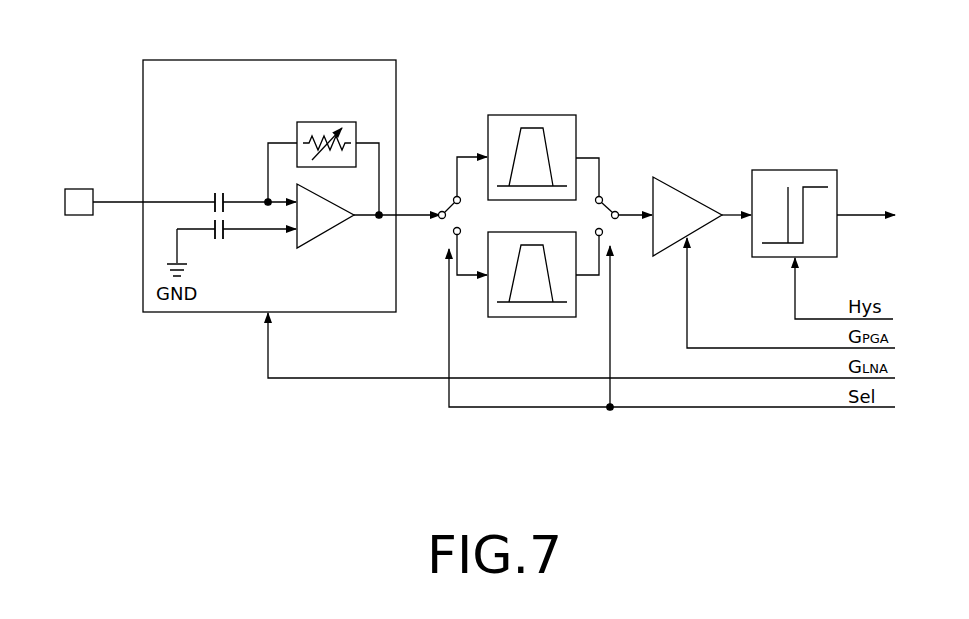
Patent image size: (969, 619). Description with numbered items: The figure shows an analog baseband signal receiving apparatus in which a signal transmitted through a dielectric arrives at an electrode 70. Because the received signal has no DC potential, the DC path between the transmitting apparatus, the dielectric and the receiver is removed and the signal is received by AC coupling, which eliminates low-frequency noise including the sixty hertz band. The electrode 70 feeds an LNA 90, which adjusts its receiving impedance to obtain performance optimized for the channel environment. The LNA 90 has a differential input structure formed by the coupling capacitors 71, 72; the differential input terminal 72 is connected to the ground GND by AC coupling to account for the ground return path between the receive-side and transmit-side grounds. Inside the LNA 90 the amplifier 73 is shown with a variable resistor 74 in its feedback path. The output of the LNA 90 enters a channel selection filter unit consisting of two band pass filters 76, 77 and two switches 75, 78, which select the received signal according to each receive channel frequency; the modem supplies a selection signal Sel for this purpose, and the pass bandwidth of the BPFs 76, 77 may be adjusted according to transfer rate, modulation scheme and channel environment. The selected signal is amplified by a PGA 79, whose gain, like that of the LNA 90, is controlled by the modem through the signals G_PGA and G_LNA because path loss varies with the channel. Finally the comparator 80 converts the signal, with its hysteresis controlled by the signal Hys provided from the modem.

The electrode 70 is at (80, 218).
The differential input 71 is at (219, 189).
The differential input terminal 72 is at (219, 243).
The amplifier (LNA) 73 is at (328, 237).
The variable resistor 74 is at (327, 120).
The switch 75 is at (442, 228).
The BPF 76 is at (562, 112).
The BPF 77 is at (562, 319).
The switch 78 is at (606, 194).
The PGA 79 is at (684, 192).
The comparator 80 is at (795, 168).
The LNA 90 is at (287, 58).